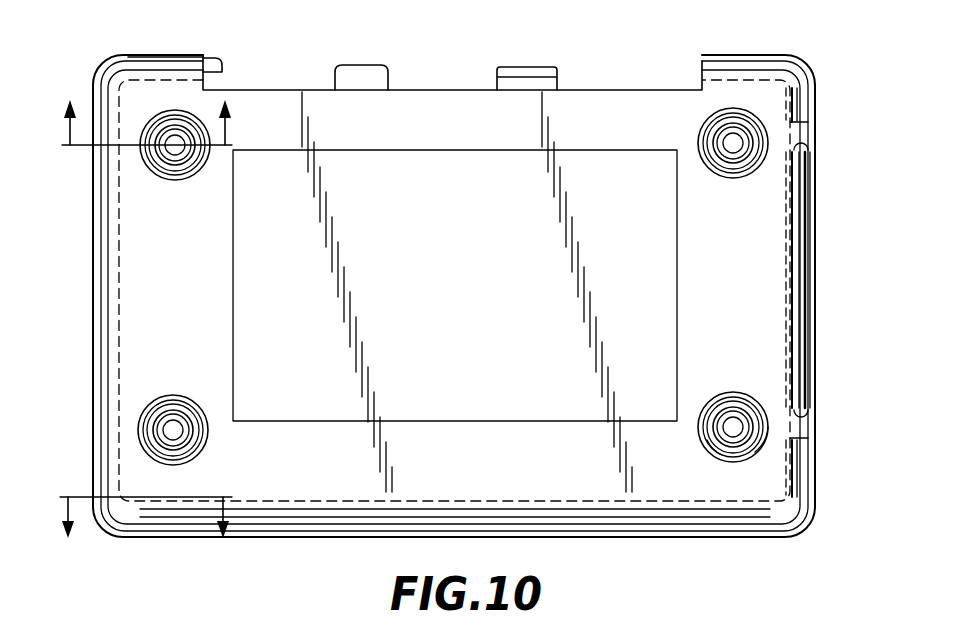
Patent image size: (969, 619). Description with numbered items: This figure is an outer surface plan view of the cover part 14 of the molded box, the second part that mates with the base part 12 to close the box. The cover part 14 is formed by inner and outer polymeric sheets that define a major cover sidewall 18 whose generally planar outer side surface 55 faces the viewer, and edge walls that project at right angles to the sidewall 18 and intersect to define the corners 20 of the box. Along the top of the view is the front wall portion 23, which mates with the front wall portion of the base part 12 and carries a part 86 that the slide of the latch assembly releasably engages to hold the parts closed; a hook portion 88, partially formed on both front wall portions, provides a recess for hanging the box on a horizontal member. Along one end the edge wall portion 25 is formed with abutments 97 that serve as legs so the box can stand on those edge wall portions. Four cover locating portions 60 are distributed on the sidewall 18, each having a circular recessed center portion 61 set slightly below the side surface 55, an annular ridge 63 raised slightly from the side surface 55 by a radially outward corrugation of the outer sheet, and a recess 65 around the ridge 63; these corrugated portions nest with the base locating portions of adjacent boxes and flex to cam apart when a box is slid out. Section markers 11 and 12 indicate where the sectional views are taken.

The cover part 14 is at (820, 189).
The cover sidewall 18 is at (550, 280).
The corner 20 is at (109, 66).
The front wall portion 23 is at (174, 57).
The edge wall portion 25 is at (92, 285).
The outer side surface 55 is at (194, 292).
The cover locating portion 60 is at (169, 182).
The recessed center portion 61 is at (730, 426).
The annular ridge 63 is at (744, 449).
The recess 65 is at (716, 453).
The part of the front wall portion 86 is at (532, 75).
The hook portion 88 is at (224, 62).
The abutment 97 is at (808, 142).
The section line 11- 11 is at (164, 491).
The base part 12 is at (166, 152).